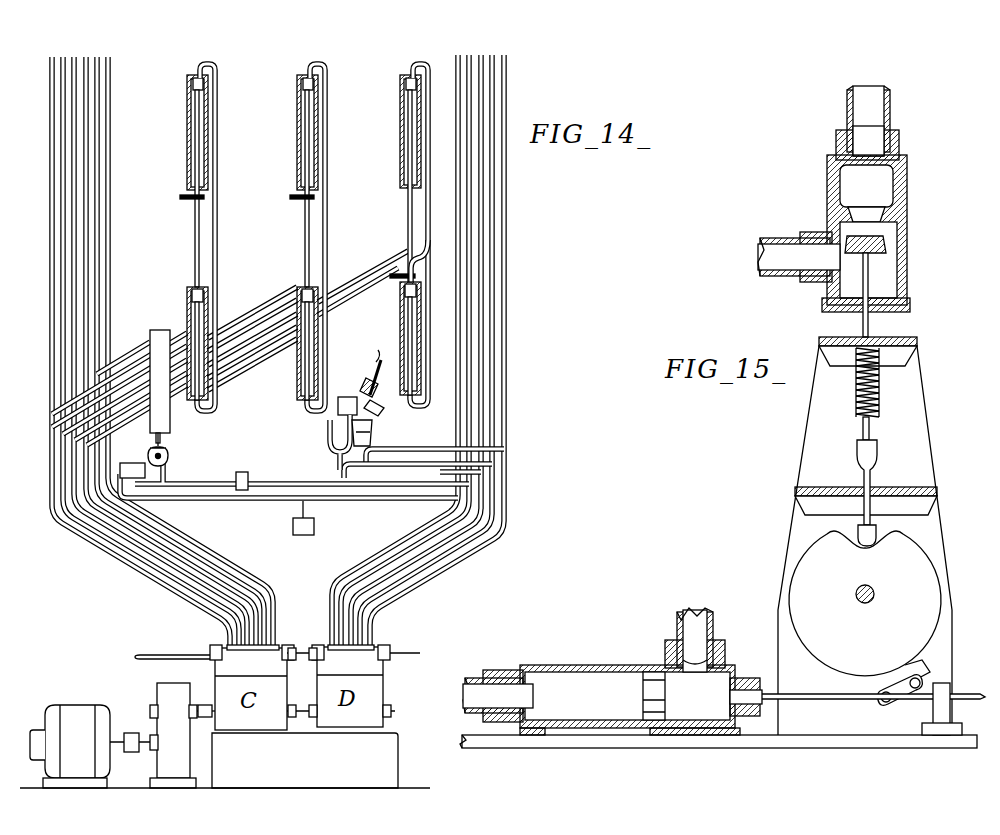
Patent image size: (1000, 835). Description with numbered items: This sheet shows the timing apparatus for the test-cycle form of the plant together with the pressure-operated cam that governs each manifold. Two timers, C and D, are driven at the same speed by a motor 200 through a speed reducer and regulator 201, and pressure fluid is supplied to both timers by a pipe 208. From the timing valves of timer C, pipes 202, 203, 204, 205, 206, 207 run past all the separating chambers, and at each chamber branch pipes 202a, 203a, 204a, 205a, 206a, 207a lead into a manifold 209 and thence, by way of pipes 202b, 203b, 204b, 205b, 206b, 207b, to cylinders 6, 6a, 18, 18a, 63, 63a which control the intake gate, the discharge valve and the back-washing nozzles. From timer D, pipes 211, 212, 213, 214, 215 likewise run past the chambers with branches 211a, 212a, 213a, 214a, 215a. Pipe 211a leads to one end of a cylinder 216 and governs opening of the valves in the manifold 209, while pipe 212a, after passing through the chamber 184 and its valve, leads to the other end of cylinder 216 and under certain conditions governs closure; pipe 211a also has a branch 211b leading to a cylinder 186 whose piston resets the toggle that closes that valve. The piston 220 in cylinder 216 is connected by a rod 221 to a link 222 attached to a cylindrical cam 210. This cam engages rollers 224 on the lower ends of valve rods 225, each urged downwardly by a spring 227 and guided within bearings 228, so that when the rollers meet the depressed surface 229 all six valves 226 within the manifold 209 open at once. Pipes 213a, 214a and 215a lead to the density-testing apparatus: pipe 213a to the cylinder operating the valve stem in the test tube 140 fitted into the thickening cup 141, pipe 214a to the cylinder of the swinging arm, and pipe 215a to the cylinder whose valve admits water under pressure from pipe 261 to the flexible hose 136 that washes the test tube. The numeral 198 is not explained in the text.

In FIG. 14, the cylinder 6 is at (187, 290).
In FIG. 14, the cylinder 6a is at (187, 142).
In FIG. 14, the cylinder 63 is at (297, 386).
In FIG. 14, the cylinder 63a is at (297, 142).
In FIG. 14, the cylinder 18 is at (400, 330).
In FIG. 14, the cylinder 18a is at (400, 135).
In FIG. 14, the flexible hose 136 is at (340, 460).
In FIG. 14, the test tube 140 is at (376, 360).
In FIG. 14, the thickening cup 141 is at (364, 380).
In FIG. 14, the chamber 184 is at (242, 472).
In FIG. 14, the cylinder 186 is at (300, 535).
In FIG. 14, the valve member 198 is at (385, 414).
In FIG. 14, the motor 200 is at (75, 705).
In FIG. 14, the speed reducer and regulator 201 is at (173, 683).
In FIG. 14, the pipe 202 is at (95, 548).
In FIG. 14, the branch pipe 202a is at (127, 374).
In FIG. 15, the branch pipe 202a is at (780, 238).
In FIG. 14, the pipe 202b is at (218, 252).
In FIG. 15, the pipe 202b is at (858, 110).
In FIG. 14, the pipe 203 is at (122, 560).
In FIG. 14, the branch pipe 203a is at (65, 415).
In FIG. 14, the pipe 203b is at (218, 328).
In FIG. 14, the pipe 204 is at (152, 572).
In FIG. 14, the branch pipe 204a is at (86, 425).
In FIG. 14, the pipe 204b is at (330, 290).
In FIG. 14, the pipe 205 is at (180, 585).
In FIG. 14, the branch pipe 205a is at (90, 434).
In FIG. 14, the pipe 205b is at (332, 300).
In FIG. 14, the pipe 206 is at (240, 575).
In FIG. 14, the branch pipe 206a is at (165, 405).
In FIG. 14, the pipe 206b is at (425, 208).
In FIG. 14, the pipe 207 is at (273, 590).
In FIG. 14, the branch pipe 207a is at (165, 418).
In FIG. 14, the pipe 207b is at (383, 295).
In FIG. 14, the pipe 208 is at (158, 652).
In FIG. 14, the manifold 209 is at (160, 330).
In FIG. 15, the manifold 209 is at (818, 195).
In FIG. 14, the cylindrical cam 210 is at (170, 458).
In FIG. 15, the cylindrical cam 210 is at (795, 578).
In FIG. 14, the pipe 211 is at (360, 580).
In FIG. 14, the branch pipe 211a is at (345, 503).
In FIG. 15, the branch pipe 211a is at (468, 676).
In FIG. 14, the branch pipe 211b is at (303, 510).
In FIG. 14, the pipe 212 is at (395, 560).
In FIG. 14, the branch pipe 212a is at (265, 484).
In FIG. 15, the branch pipe 212a is at (694, 612).
In FIG. 14, the pipe 213 is at (425, 548).
In FIG. 14, the branch pipe 213a is at (473, 472).
In FIG. 14, the pipe 214 is at (455, 570).
In FIG. 14, the branch pipe 214a is at (404, 462).
In FIG. 14, the pipe 215 is at (480, 552).
In FIG. 14, the branch pipe 215a is at (436, 446).
In FIG. 14, the cylinder 216 is at (128, 460).
In FIG. 15, the cylinder 216 is at (602, 665).
In FIG. 15, the piston 220 is at (648, 694).
In FIG. 15, the rod 221 is at (826, 694).
In FIG. 15, the link 222 is at (905, 700).
In FIG. 15, the roller 224 is at (874, 546).
In FIG. 15, the valve rod 225 is at (870, 430).
In FIG. 15, the valve 226 is at (890, 240).
In FIG. 15, the spring 227 is at (880, 394).
In FIG. 15, the bearing 228 is at (870, 340).
In FIG. 15, the depressed surface 229 is at (848, 544).
In FIG. 14, the pipe 261 is at (338, 432).